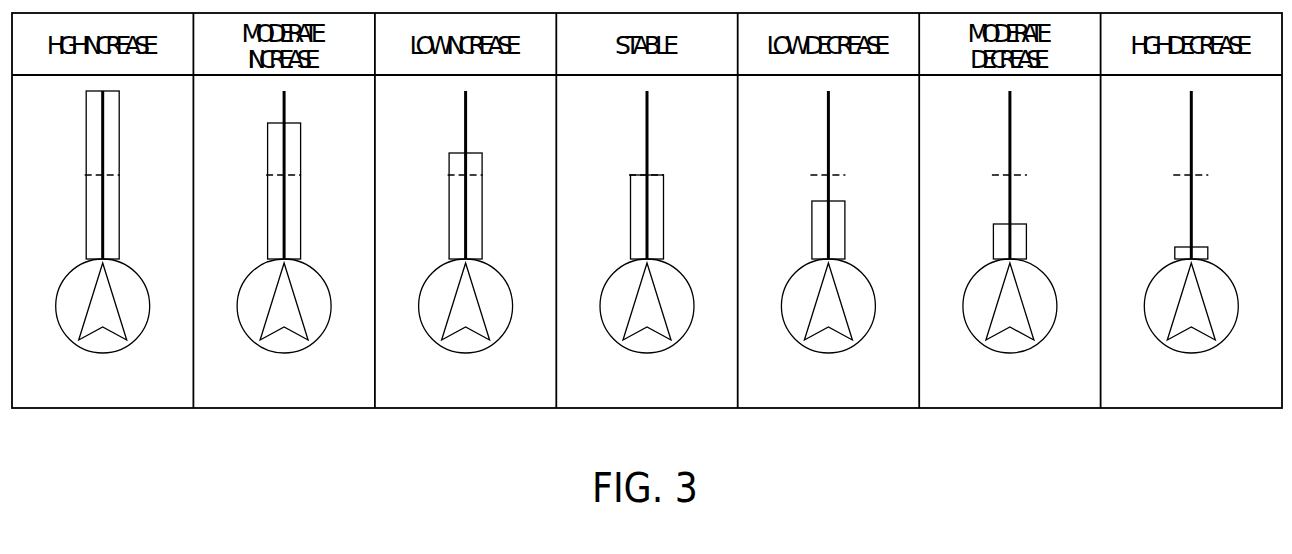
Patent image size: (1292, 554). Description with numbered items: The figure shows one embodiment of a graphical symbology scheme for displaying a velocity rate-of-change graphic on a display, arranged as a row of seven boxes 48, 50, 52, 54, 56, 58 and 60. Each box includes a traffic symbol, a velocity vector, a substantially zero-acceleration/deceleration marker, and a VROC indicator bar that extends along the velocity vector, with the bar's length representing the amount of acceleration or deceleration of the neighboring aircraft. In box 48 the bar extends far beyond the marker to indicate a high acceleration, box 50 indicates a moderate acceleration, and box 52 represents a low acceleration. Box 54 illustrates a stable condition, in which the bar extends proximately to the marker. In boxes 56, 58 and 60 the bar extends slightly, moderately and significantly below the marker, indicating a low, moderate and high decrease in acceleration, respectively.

The box 48 is at (57, 398).
The box 50 is at (238, 398).
The box 52 is at (420, 398).
The box 54 is at (601, 398).
The box 56 is at (783, 398).
The box 58 is at (964, 398).
The box 60 is at (1146, 398).